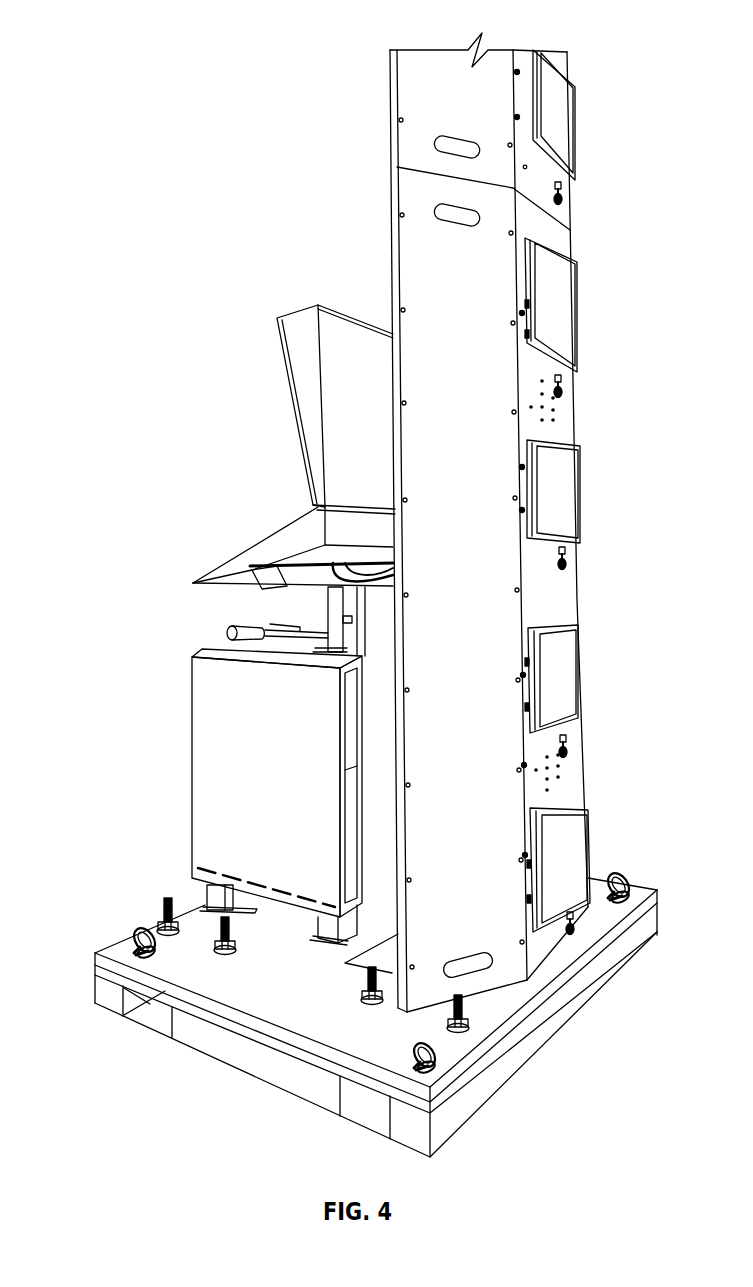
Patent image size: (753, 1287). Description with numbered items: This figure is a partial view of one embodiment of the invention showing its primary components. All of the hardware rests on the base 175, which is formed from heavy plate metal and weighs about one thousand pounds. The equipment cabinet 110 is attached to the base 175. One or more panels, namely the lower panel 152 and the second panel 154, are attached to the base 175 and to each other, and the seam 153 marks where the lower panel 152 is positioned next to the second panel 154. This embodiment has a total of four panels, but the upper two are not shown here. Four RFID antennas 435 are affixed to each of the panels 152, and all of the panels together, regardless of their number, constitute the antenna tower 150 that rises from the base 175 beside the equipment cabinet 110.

The equipment cabinet 110 is at (110, 49).
The antenna tower 150 is at (587, 294).
The lower panel 152 is at (390, 238).
The seam 153 is at (390, 148).
The second panel 154 is at (390, 90).
The RFID antenna 435 is at (568, 483).
The base 175 is at (500, 1002).